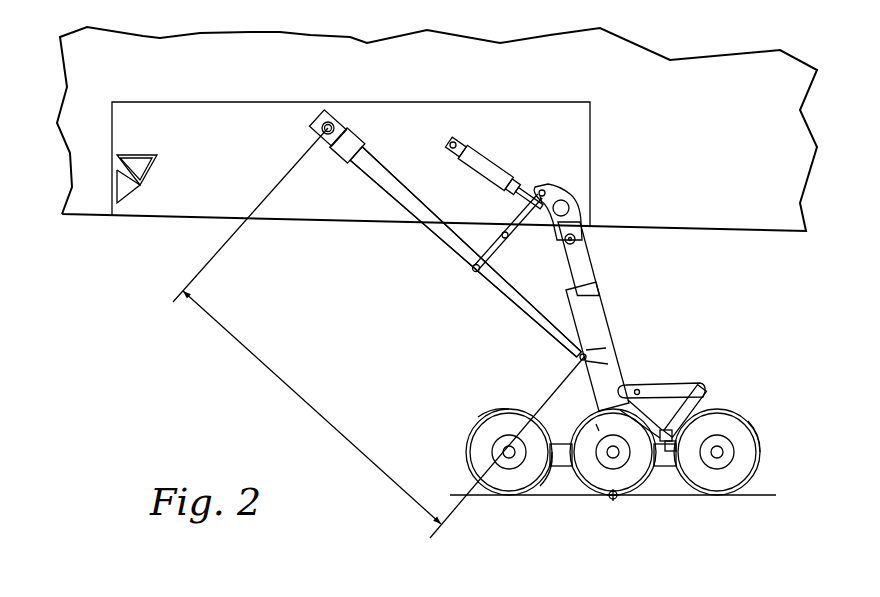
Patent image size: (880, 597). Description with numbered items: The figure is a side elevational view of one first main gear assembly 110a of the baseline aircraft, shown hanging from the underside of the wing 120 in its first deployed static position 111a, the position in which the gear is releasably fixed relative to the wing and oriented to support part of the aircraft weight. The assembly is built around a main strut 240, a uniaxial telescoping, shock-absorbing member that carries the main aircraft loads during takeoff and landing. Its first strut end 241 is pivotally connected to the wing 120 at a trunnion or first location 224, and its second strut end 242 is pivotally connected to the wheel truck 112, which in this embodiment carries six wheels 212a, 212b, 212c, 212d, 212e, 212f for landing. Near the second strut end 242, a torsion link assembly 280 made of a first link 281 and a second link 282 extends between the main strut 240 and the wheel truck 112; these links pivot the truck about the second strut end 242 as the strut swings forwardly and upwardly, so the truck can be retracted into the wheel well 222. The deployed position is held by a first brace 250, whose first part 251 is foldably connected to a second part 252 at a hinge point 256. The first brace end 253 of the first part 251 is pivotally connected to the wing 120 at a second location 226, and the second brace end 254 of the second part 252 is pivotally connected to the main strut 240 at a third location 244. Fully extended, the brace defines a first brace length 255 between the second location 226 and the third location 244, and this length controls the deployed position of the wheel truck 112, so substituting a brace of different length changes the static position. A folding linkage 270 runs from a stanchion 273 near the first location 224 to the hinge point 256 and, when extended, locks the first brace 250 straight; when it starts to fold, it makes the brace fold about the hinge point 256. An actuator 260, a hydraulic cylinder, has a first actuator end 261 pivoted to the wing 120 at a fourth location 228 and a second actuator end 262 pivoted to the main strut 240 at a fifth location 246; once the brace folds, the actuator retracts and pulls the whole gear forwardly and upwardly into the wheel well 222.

The wing 120 is at (93, 218).
The wheel well 222 is at (150, 229).
The second location 226 is at (320, 137).
The first brace end 253 is at (325, 147).
The first brace 250 is at (500, 293).
The first part 251 is at (438, 238).
The second part 252 is at (532, 321).
The second brace end 254 is at (563, 357).
The first brace length 255 is at (288, 386).
The hinge point 256 is at (472, 272).
The second actuator end 262 is at (549, 247).
The folding linkage 270 is at (504, 232).
The fourth location 228 is at (451, 141).
The first actuator end 261 is at (447, 152).
The actuator 260 is at (482, 176).
The stanchion 273 is at (541, 189).
The first location 224 is at (562, 199).
The first strut end 241 is at (580, 206).
The fifth location 246 is at (576, 241).
The main strut 240 is at (612, 312).
The second strut end 242 is at (590, 427).
The third location 244 is at (579, 359).
The first main gear assembly 110a is at (725, 288).
The wheel truck 112 is at (741, 404).
The wheel 212a is at (760, 482).
The wheel 212b is at (650, 482).
The wheel 212c is at (466, 453).
The wheel 212d is at (763, 438).
The wheel 212e is at (573, 480).
The wheel 212f is at (480, 413).
The first deployed static position 111a is at (613, 500).
The torsion link assembly 280 is at (695, 368).
The first link 281 is at (672, 383).
The second link 282 is at (713, 397).